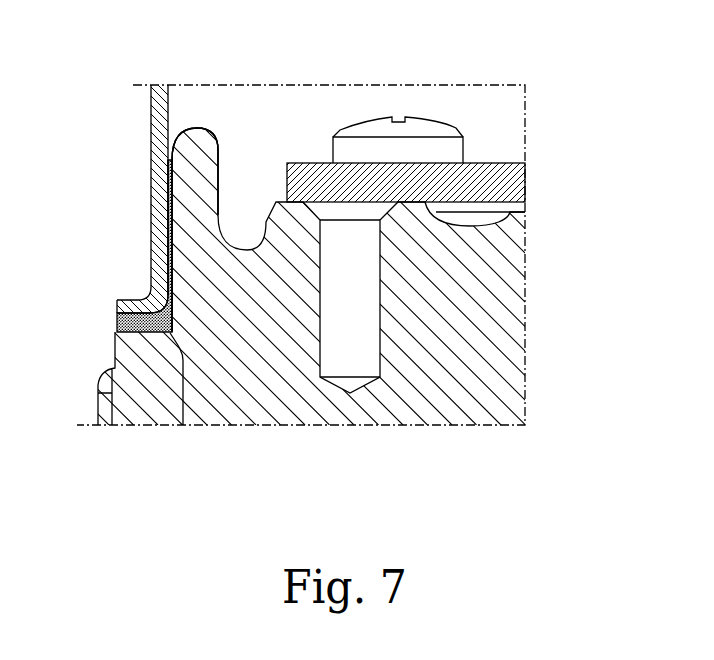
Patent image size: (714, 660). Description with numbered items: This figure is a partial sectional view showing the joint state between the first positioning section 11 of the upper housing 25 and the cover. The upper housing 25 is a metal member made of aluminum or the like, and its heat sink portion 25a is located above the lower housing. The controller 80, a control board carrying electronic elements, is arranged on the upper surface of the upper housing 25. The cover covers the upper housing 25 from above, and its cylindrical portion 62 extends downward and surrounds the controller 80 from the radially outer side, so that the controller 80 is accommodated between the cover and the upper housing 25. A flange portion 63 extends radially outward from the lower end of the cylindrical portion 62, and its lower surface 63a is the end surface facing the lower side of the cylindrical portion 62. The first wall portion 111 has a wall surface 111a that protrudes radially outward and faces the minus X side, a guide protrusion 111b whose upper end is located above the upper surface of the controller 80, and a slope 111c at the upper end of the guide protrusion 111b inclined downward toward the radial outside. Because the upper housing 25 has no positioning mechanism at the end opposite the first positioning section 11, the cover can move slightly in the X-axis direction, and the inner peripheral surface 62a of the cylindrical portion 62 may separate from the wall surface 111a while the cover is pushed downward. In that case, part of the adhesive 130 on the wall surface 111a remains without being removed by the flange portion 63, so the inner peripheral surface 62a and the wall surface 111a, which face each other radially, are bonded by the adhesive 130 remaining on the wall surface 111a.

The first positioning section 11 is at (231, 145).
The upper housing 25 is at (526, 355).
The heat sink portion 25a is at (517, 283).
The cylindrical portion 62 is at (150, 137).
The inner peripheral surface 62a is at (218, 196).
The flange portion 63 is at (117, 308).
The lower surface 63a is at (117, 322).
The controller 80 is at (515, 182).
The first wall portion 111 is at (199, 124).
The wall surface 111a is at (166, 213).
The guide protrusion 111b is at (213, 137).
The slope 111c is at (176, 136).
The adhesive 130 is at (183, 425).